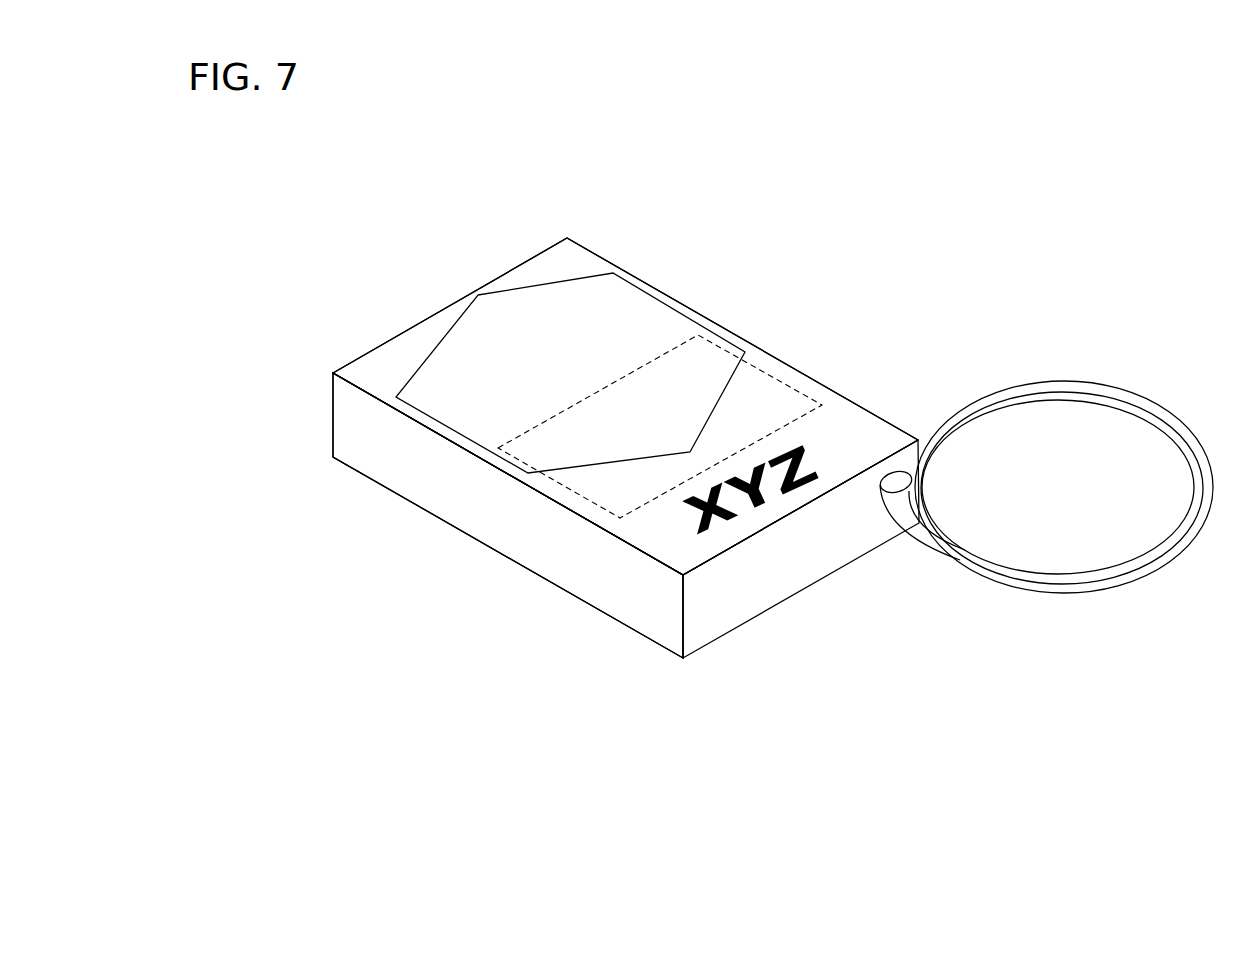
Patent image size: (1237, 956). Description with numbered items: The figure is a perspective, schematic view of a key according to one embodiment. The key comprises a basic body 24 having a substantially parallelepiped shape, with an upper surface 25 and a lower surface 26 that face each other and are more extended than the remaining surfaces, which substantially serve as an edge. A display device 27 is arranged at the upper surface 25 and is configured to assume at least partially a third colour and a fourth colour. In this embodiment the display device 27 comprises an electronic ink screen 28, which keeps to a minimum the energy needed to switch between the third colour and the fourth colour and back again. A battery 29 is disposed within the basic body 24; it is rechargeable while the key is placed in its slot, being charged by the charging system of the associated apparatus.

The basic body 24 is at (470, 500).
The upper surface 25 is at (598, 292).
The lower surface 26 is at (558, 556).
The display device 27 is at (833, 393).
The electronic ink screen 28 is at (442, 408).
The battery 29 is at (790, 374).